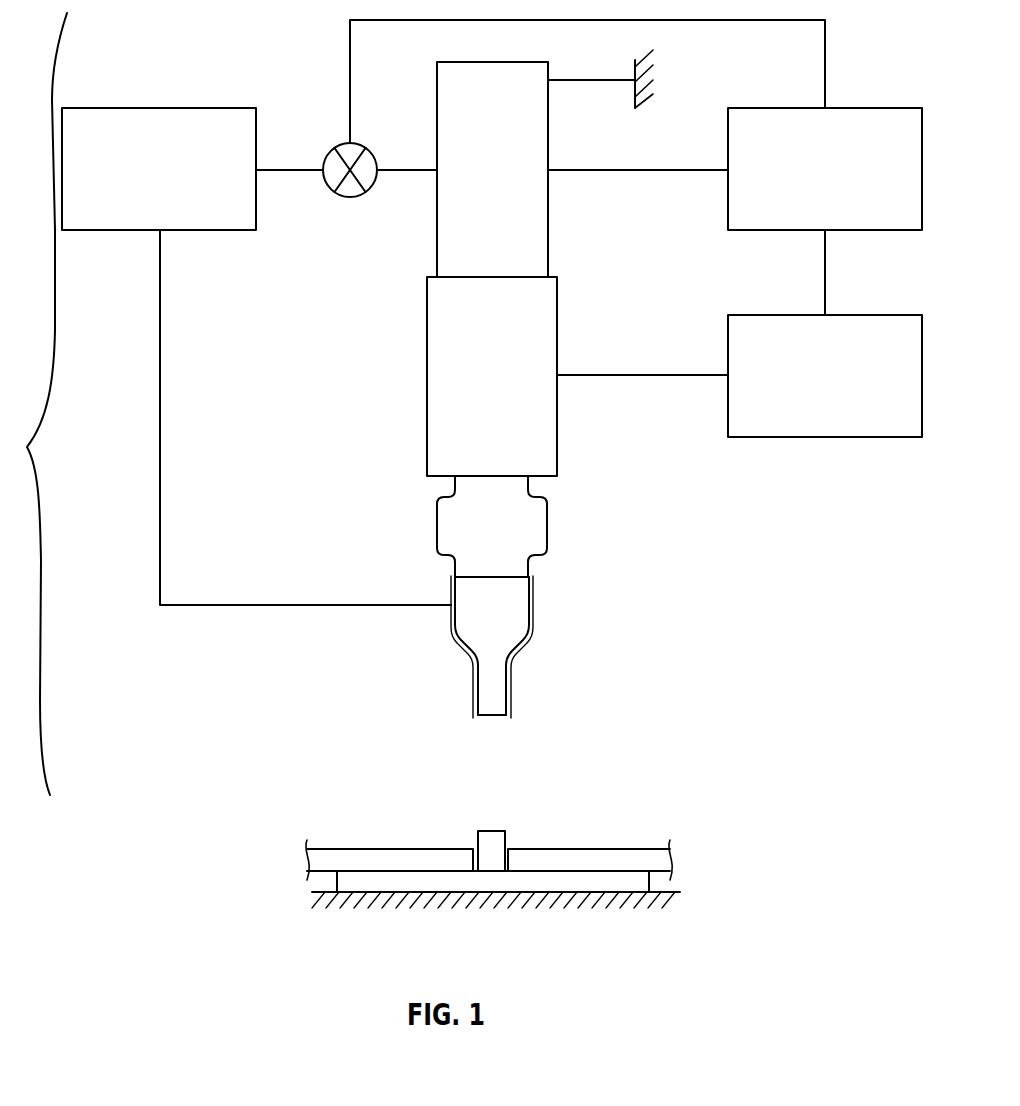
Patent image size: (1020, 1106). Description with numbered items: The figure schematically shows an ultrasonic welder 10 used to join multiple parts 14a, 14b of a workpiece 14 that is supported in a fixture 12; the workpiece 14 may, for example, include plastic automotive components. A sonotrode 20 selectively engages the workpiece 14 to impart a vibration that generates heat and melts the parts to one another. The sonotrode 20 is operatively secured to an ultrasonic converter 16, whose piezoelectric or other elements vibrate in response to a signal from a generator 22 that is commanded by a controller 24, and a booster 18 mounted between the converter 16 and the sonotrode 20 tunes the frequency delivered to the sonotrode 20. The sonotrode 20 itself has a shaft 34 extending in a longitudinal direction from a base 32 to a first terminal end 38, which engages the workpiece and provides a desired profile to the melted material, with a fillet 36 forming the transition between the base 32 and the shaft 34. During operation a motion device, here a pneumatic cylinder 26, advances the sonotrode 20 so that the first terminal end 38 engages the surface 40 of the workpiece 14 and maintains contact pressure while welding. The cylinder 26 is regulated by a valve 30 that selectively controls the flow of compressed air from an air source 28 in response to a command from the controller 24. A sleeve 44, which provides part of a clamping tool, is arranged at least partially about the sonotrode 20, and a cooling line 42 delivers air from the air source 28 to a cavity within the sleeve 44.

The ultrasonic welder 10 is at (35, 404).
The fixture 12 is at (680, 889).
The workpiece 14 is at (491, 850).
The part of workpiece 14a is at (337, 883).
The part of workpiece 14b is at (355, 862).
The ultrasonic converter 16 is at (427, 375).
The booster 18 is at (437, 530).
The sonotrode 20 is at (478, 660).
The generator 22 is at (870, 315).
The controller 24 is at (870, 108).
The pneumatic cylinder 26 is at (437, 213).
The air source 28 is at (117, 107).
The valve 30 is at (335, 145).
The base 32 is at (517, 600).
The shaft 34 is at (499, 667).
The fillet 36 is at (517, 634).
The first terminal end 38 is at (492, 717).
The surface of workpiece 40 is at (490, 831).
The cooling line 42 is at (190, 604).
The sleeve 44 is at (468, 642).